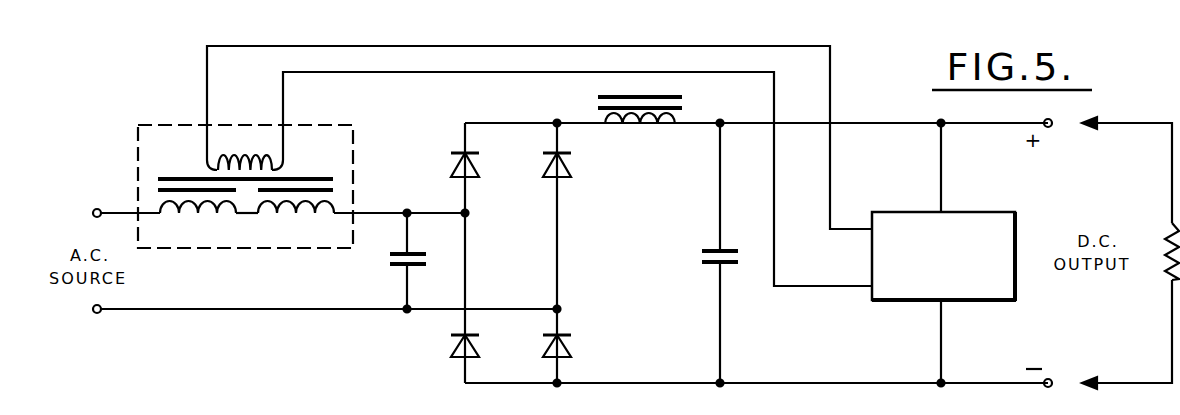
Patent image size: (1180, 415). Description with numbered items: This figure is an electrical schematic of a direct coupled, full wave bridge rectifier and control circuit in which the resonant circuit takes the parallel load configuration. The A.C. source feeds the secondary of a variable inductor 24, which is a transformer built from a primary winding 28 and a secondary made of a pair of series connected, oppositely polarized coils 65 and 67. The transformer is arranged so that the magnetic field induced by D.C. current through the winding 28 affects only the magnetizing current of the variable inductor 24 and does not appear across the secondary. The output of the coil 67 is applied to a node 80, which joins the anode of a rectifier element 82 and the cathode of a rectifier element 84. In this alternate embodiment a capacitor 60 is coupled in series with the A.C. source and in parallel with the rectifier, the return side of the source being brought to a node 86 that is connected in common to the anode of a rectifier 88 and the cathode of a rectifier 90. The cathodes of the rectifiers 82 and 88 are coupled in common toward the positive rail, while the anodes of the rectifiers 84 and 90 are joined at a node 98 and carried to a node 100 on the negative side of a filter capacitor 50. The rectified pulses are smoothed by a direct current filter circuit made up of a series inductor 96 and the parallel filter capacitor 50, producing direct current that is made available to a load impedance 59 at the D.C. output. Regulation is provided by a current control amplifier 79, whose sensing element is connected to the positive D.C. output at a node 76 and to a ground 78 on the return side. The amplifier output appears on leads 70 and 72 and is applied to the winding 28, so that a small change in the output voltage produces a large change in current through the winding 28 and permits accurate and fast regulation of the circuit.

The variable inductor 24 is at (138, 143).
The winding 28 is at (283, 165).
The coil 65 is at (204, 218).
The coil 67 is at (301, 218).
The lead 70 is at (283, 93).
The lead 72 is at (207, 80).
The capacitor 60 is at (392, 250).
The node 80 is at (467, 212).
The rectifier element 82 is at (453, 153).
The rectifier element 84 is at (453, 353).
The node 86 is at (560, 307).
The rectifier 88 is at (565, 170).
The rectifier 90 is at (546, 354).
The node 98 is at (560, 381).
The node 100 is at (722, 381).
The series inductor 96 is at (683, 106).
The filter capacitor 50 is at (702, 251).
The node 76 is at (940, 124).
The ground 78 is at (944, 381).
The current control amplifier 79 is at (1016, 213).
The load impedance 59 is at (1165, 272).